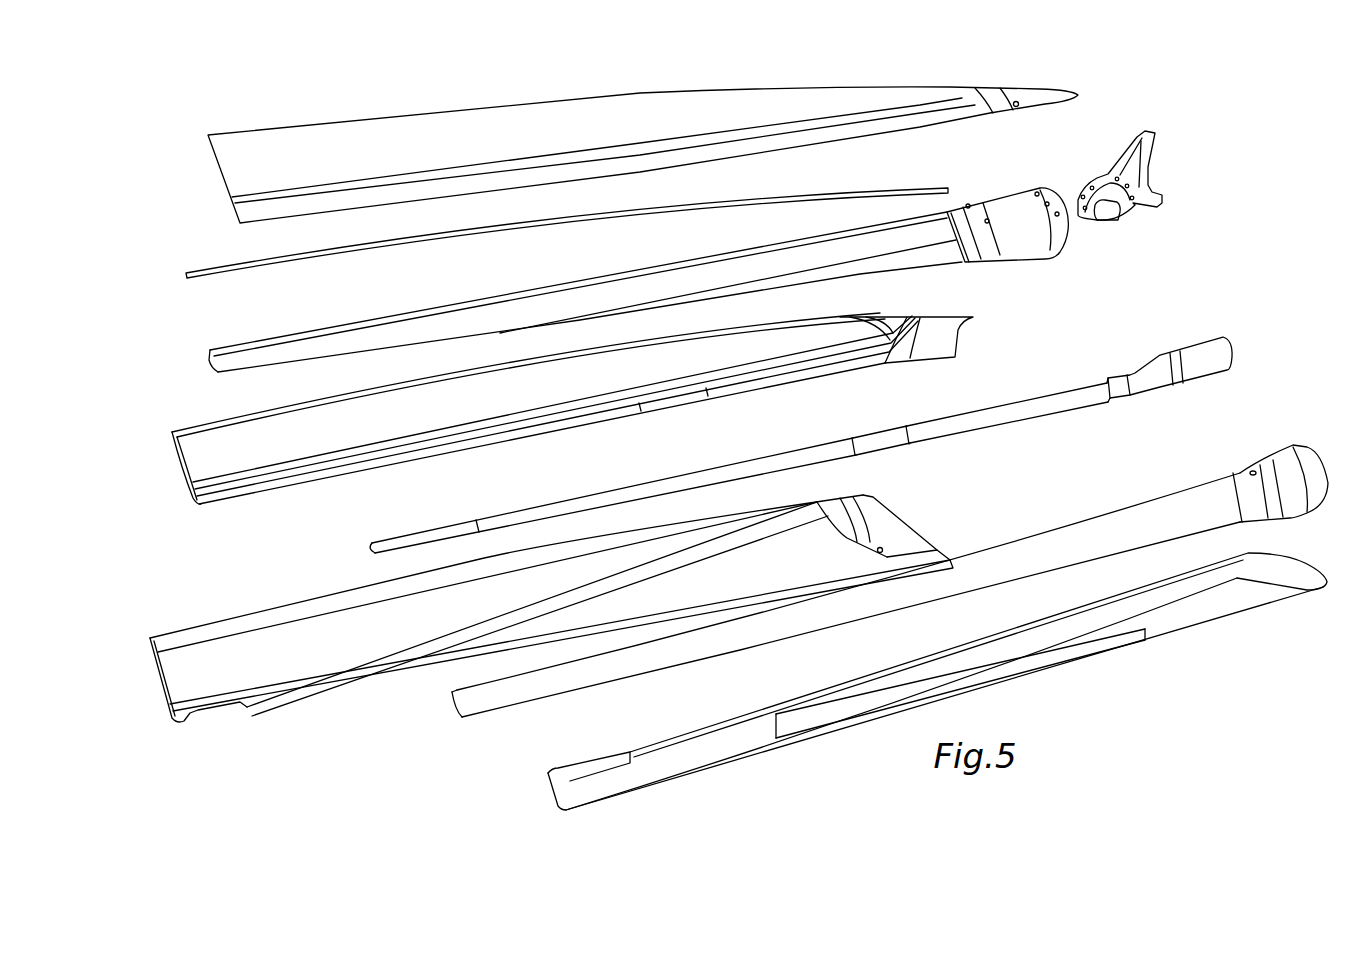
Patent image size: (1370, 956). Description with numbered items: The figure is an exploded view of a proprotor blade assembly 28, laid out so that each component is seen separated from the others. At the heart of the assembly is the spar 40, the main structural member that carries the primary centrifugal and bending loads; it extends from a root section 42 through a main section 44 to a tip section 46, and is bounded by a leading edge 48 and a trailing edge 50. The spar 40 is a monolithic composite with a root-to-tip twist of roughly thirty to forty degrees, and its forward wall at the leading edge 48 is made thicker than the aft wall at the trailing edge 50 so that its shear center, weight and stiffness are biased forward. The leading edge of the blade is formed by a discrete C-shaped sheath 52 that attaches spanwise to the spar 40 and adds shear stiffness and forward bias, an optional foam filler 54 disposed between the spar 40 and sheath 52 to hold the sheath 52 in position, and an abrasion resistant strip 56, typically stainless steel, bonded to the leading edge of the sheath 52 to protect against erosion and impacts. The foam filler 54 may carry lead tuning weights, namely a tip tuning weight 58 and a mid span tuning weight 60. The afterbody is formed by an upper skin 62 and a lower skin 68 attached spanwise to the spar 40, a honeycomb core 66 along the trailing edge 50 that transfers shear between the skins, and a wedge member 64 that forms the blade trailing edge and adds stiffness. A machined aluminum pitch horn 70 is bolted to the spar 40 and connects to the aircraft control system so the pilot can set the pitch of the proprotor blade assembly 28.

The proprotor blade assembly 28 is at (1062, 312).
The spar 40 is at (328, 337).
The root section 42 is at (1010, 208).
The main section 44 is at (607, 293).
The tip section 46 is at (230, 352).
The leading edge 48 is at (747, 290).
The trailing edge 50 is at (682, 262).
The sheath 52 is at (1050, 537).
The foam filler 54 is at (1018, 405).
The abrasion resistant strip 56 is at (1195, 628).
The tip tuning weight 58 is at (428, 530).
The mid span tuning weight 60 is at (880, 440).
The upper skin 62 is at (418, 128).
The wedge member 64 is at (218, 270).
The core 66 is at (210, 435).
The lower skin 68 is at (290, 618).
The pitch horn 70 is at (1148, 205).